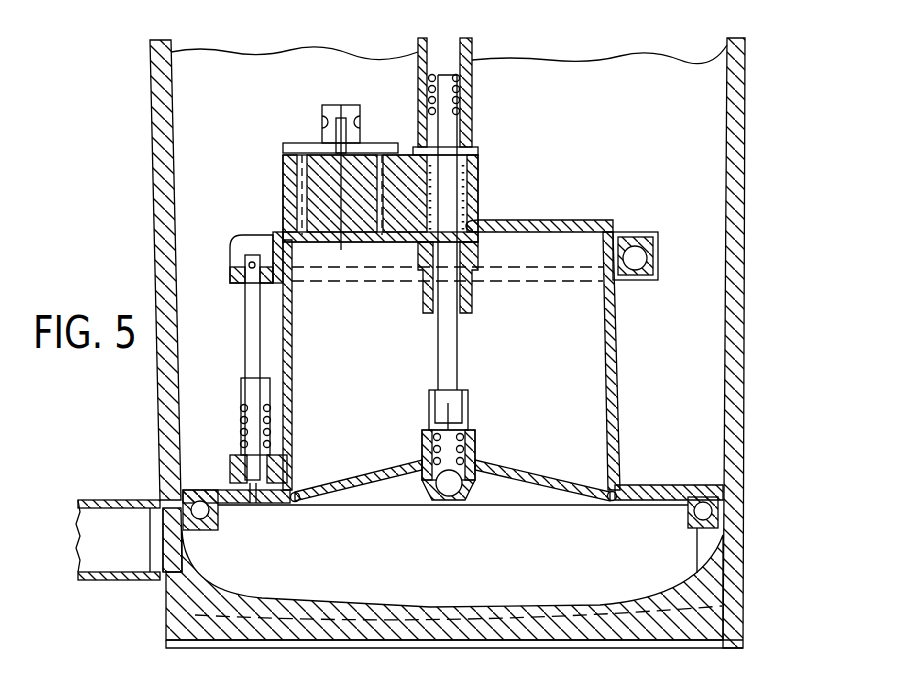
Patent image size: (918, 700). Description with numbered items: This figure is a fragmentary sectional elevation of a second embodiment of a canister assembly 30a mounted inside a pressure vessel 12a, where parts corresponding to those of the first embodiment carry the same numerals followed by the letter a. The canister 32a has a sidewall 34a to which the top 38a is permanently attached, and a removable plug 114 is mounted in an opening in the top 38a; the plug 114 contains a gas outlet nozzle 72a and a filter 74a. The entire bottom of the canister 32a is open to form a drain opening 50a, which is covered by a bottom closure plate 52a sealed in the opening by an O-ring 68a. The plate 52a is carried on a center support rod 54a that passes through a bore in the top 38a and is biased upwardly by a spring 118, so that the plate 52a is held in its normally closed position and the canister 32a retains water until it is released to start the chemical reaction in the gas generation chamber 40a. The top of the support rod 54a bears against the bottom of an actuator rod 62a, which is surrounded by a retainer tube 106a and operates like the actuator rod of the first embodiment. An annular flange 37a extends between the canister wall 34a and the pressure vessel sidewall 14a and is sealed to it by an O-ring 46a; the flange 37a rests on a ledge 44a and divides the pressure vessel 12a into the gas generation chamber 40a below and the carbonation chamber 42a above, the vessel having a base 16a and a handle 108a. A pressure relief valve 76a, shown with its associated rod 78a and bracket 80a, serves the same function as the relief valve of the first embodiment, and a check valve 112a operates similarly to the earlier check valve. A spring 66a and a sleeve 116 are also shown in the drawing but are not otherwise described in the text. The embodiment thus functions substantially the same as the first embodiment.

The pressure vessel 12a is at (747, 172).
The pressure vessel sidewall 14a is at (745, 330).
The housing base 16a is at (512, 642).
The canister assembly 30a is at (558, 177).
The canister 32a is at (617, 345).
The sidewall 34a is at (618, 415).
The annular flange 37a is at (645, 485).
The top 38a is at (547, 220).
The gas generation chamber 40a is at (470, 595).
The carbonation chamber 42a is at (672, 113).
The ledge 44a is at (700, 552).
The O-ring 46a is at (710, 508).
The drain opening 50a is at (313, 483).
The bottom closure plate 52a is at (360, 500).
The center support rod 54a is at (462, 373).
The actuator rod 62a is at (465, 135).
The spring 66a is at (432, 98).
The O-ring 68a is at (617, 500).
The gas outlet nozzle 72a is at (322, 112).
The filter 74a is at (305, 182).
The pressure relief valve 76a is at (255, 505).
The guide rod 78a is at (247, 347).
The bracket 80a is at (230, 245).
The inlet tube 106a is at (472, 75).
The outlet pipe 108a is at (98, 500).
The check valve 112a is at (450, 505).
The removable plug 114 is at (297, 210).
The sleeve 116 is at (462, 312).
The spring 118 is at (465, 210).